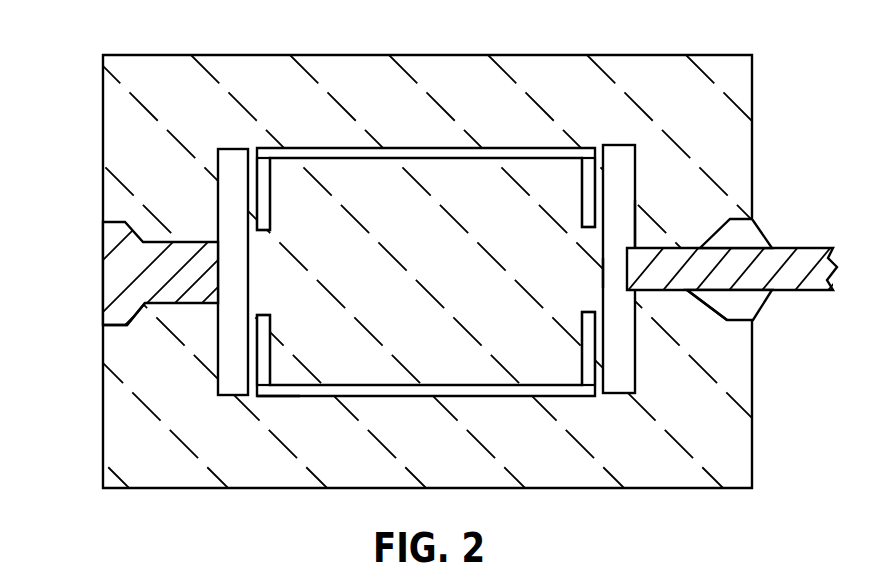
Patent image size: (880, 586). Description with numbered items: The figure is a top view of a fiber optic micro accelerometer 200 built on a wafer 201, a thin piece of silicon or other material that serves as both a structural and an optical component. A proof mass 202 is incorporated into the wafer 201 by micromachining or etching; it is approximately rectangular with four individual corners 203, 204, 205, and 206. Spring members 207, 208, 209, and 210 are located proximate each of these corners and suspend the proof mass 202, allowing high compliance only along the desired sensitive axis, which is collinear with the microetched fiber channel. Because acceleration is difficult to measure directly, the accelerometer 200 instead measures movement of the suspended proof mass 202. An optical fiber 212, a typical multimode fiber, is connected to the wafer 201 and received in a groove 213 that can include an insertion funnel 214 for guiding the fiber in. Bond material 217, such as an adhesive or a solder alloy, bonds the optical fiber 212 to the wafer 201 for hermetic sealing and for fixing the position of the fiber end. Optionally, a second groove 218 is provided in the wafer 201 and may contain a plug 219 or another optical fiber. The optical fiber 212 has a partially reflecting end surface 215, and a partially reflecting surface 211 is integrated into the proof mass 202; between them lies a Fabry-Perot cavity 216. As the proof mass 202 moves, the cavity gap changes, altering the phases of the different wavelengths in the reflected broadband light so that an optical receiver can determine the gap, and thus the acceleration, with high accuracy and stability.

The fiber optic micro accelerometer 200 is at (208, 17).
The wafer 201 is at (672, 464).
The proof mass 202 is at (452, 349).
The corner 203 is at (592, 147).
The corner 204 is at (588, 395).
The corner 205 is at (263, 396).
The corner 206 is at (260, 157).
The spring member 207 is at (594, 183).
The spring member 208 is at (590, 340).
The spring member 209 is at (258, 345).
The spring member 210 is at (258, 199).
The partially reflecting surface 211 is at (597, 228).
The optical fiber 212 is at (790, 248).
The groove 213 is at (688, 292).
The insertion funnel 214 is at (727, 320).
The partially reflecting end surface 215 is at (603, 272).
The Fabry-Perot cavity 216 is at (612, 260).
The bond material 217 is at (758, 219).
The second groove 218 is at (132, 212).
The plug 219 is at (103, 305).